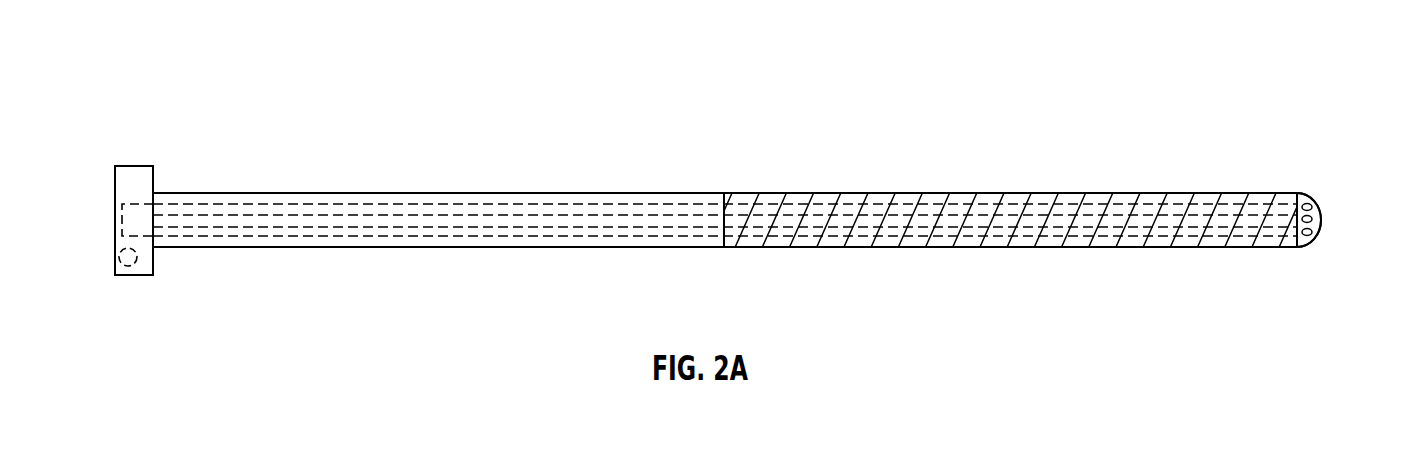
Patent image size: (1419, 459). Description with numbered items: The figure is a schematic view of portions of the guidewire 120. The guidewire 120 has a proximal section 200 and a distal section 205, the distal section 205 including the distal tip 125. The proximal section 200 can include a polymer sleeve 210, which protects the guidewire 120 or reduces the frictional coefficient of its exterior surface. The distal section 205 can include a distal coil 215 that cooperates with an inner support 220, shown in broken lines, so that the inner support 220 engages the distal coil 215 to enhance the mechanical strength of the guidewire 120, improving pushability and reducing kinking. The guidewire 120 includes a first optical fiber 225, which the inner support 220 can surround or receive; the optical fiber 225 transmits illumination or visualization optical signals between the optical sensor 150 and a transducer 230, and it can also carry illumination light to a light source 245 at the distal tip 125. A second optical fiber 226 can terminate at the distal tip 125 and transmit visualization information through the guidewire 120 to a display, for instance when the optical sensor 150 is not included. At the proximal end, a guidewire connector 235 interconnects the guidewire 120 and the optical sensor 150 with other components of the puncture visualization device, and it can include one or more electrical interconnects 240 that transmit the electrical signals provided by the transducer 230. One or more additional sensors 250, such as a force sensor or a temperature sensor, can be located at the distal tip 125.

The guidewire 120 is at (240, 88).
The distal tip 125 is at (1328, 230).
The optical sensor 150 is at (1307, 203).
The proximal section 200 is at (619, 149).
The distal section 205 is at (838, 149).
The polymer sleeve 210 is at (355, 205).
The distal coil 215 is at (902, 202).
The inner support 220 is at (977, 198).
The first optical fiber 225 is at (270, 204).
The second optical fiber 226 is at (278, 236).
The transducer 230 is at (125, 219).
The guidewire connector 235 is at (127, 173).
The electrical interconnects 240 is at (140, 263).
The light source 245 is at (1307, 237).
The additional sensors 250 is at (1311, 217).